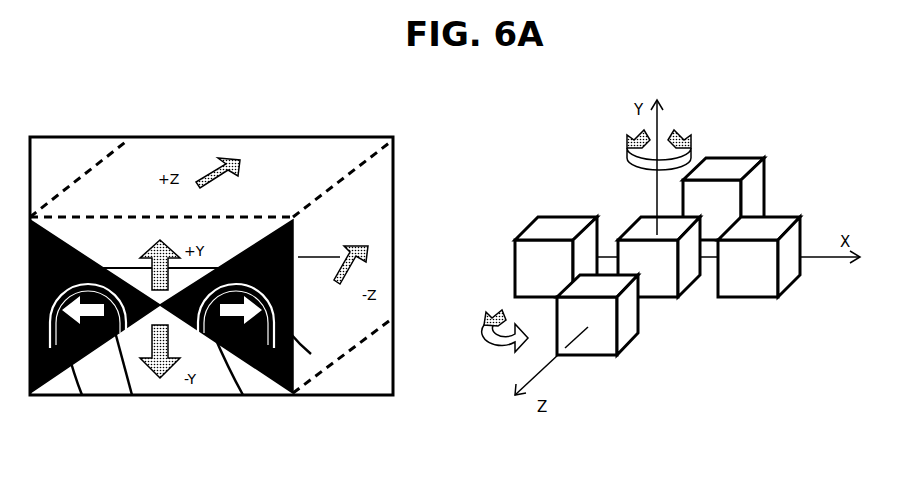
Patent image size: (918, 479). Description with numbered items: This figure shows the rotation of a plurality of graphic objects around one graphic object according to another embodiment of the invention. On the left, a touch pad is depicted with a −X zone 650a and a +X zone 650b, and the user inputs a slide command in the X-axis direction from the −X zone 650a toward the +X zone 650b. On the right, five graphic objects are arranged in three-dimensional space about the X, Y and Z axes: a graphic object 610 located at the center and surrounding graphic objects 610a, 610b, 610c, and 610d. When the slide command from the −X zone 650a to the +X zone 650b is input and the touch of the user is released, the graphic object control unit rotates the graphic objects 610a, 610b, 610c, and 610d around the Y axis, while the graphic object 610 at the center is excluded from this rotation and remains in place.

The graphic object 610 is at (695, 277).
The graphic object 610a is at (553, 232).
The graphic object 610b is at (630, 338).
The graphic object 610c is at (796, 278).
The graphic object 610d is at (741, 170).
The −X zone 650a is at (98, 348).
The +X zone 650b is at (292, 346).